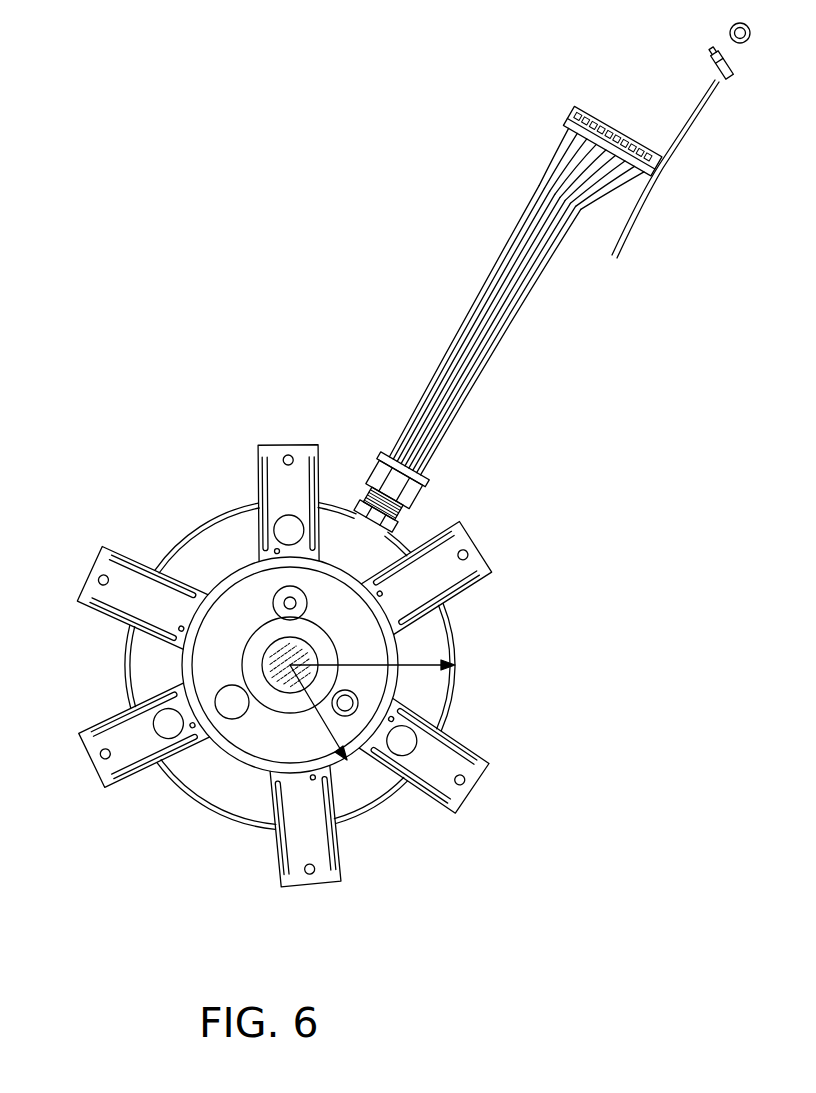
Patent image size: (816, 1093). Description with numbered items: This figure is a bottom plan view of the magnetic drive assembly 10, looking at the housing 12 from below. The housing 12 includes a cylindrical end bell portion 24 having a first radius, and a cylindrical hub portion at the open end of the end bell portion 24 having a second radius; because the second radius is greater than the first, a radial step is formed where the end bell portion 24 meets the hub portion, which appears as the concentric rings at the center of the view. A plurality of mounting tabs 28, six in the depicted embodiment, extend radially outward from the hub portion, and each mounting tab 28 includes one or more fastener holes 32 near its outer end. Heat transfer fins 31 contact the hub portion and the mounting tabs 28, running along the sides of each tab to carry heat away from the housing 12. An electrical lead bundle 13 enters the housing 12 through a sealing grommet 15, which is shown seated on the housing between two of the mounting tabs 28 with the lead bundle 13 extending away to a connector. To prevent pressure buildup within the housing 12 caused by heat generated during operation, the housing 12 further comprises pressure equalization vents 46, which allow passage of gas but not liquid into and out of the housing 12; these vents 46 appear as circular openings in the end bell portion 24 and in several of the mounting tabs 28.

The magnetic drive assembly 10 is at (233, 300).
The housing 12 is at (357, 828).
The electrical lead bundle 13 is at (517, 305).
The sealing grommet 15 is at (440, 455).
The end bell portion 24 is at (240, 768).
The mounting tab 28 is at (268, 447).
The heat transfer fin 31 is at (318, 468).
The fastener hole 32 is at (289, 455).
The pressure equalization vent 46 is at (278, 532).